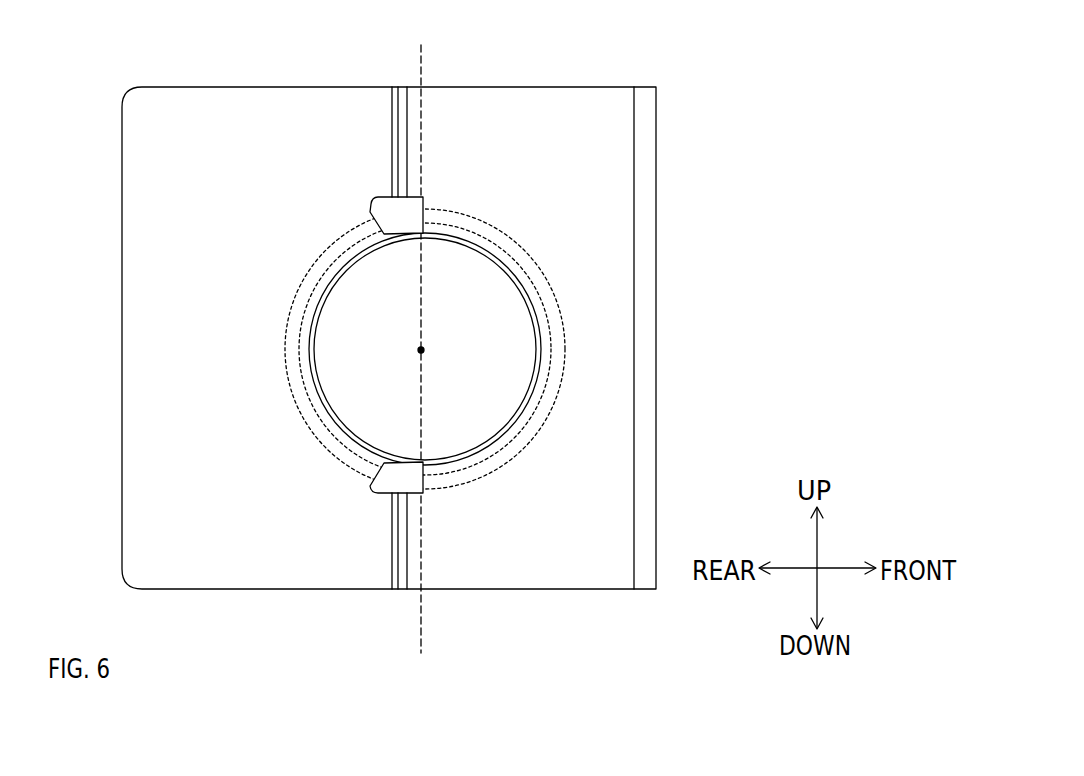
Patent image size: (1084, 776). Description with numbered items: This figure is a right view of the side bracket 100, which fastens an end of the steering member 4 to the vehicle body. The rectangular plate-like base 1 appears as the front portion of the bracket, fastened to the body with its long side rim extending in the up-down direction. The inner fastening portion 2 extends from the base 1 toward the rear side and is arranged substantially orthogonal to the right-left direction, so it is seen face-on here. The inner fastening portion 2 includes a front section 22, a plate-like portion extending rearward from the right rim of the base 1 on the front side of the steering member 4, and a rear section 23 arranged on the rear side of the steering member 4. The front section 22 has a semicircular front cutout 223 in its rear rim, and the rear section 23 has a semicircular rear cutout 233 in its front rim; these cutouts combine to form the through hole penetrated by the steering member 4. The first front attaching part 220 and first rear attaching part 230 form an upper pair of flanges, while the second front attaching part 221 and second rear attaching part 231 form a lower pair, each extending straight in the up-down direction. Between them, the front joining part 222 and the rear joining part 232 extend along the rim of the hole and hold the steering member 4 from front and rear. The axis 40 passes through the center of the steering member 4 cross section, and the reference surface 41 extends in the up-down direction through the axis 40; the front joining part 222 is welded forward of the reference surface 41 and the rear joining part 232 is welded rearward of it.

The side bracket 100 is at (702, 87).
The base 1 is at (648, 205).
The inner fastening portion 2 is at (95, 196).
The front section 22 is at (568, 565).
The rear section 23 is at (137, 500).
The steering member 4 is at (363, 440).
The axis 40 is at (426, 350).
The reference surface 41 is at (421, 614).
The first front attaching part 220 is at (405, 134).
The second front attaching part 221 is at (405, 528).
The front joining part 222 is at (506, 249).
The front cutout 223 is at (471, 414).
The first rear attaching part 230 is at (393, 150).
The second rear attaching part 231 is at (393, 548).
The rear joining part 232 is at (316, 296).
The rear cutout 233 is at (333, 350).